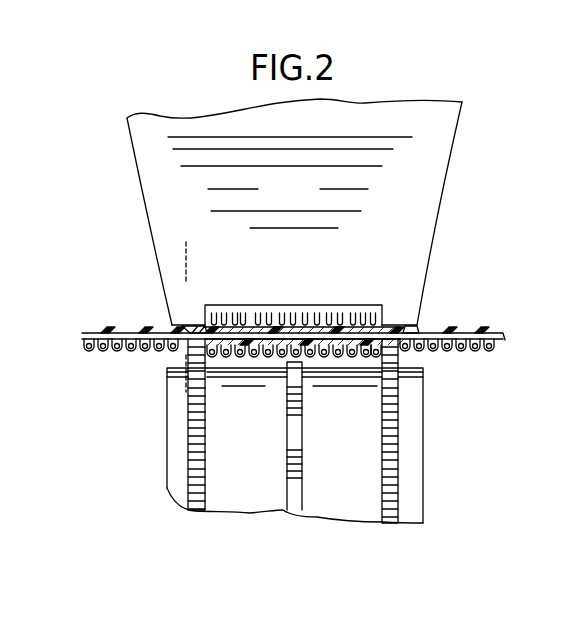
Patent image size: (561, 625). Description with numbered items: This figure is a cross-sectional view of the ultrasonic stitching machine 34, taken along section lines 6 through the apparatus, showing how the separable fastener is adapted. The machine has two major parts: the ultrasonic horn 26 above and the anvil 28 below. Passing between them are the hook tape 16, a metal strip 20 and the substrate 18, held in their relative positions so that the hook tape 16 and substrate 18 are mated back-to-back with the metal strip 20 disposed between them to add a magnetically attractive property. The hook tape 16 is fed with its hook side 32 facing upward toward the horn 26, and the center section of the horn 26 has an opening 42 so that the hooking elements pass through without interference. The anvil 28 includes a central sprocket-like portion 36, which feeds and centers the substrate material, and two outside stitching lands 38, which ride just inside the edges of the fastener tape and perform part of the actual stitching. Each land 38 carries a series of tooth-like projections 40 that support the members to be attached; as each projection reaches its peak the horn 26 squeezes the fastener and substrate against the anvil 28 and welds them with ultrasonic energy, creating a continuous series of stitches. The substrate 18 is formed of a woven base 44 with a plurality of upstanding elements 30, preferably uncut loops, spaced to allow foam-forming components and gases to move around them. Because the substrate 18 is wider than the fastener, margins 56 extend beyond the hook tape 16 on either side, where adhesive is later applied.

The section line 6- 6 is at (186, 263).
The hook tape 16 is at (200, 326).
The substrate 18 is at (505, 341).
The metal strip 20 is at (358, 323).
The horn 26 is at (301, 194).
The anvil 28 is at (353, 447).
The elements 30 is at (101, 353).
The hook side 32 is at (247, 322).
The ultrasonic stitching machine 34 is at (420, 325).
The central sprocket-like portion 36 is at (293, 511).
The outside stitching lands 38 is at (195, 511).
The tooth-like projections 40 is at (195, 458).
The opening 42 is at (317, 312).
The base 44 is at (94, 353).
The margins 56 is at (146, 333).